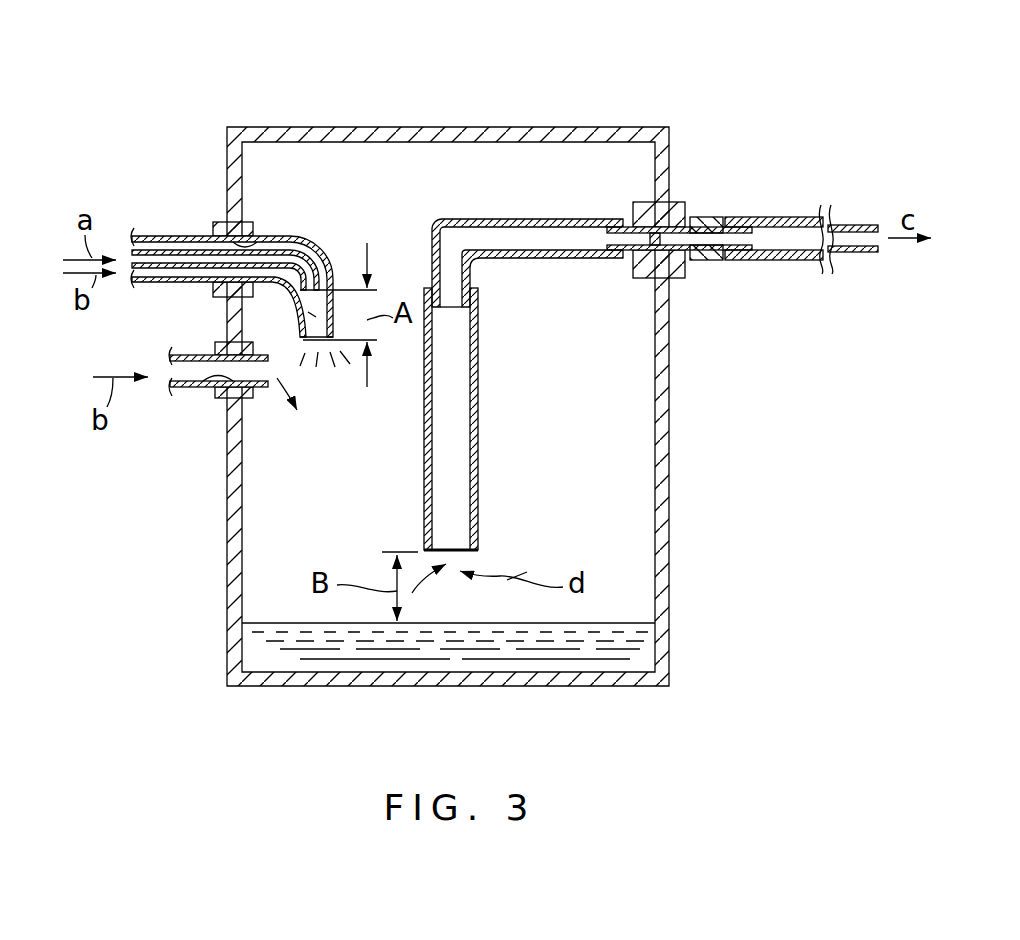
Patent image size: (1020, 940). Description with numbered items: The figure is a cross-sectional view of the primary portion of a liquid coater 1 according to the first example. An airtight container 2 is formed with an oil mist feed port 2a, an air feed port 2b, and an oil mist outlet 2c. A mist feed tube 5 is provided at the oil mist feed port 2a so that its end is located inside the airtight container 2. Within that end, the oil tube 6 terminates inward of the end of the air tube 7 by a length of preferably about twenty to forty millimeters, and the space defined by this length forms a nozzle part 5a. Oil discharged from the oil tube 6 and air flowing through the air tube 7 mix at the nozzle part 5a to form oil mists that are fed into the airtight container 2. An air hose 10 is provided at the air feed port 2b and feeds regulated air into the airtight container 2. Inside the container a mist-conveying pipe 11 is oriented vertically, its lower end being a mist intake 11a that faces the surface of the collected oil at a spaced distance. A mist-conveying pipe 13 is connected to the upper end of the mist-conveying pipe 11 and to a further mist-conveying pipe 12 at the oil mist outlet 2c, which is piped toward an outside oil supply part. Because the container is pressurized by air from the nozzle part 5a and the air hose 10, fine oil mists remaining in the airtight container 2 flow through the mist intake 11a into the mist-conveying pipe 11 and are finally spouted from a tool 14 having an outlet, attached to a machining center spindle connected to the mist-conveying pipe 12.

The apparatus 1 is at (598, 84).
The airtight container 2 is at (425, 130).
The oil mist feed port 2a is at (253, 236).
The air feed port 2b is at (212, 398).
The oil mist outlet 2c is at (693, 217).
The mist feed tube 5 is at (167, 236).
The nozzle part 5a is at (297, 340).
The oil tube 6 is at (148, 283).
The air tube 7 is at (188, 282).
The air hose 10 is at (188, 388).
The mist-conveying pipe 11 is at (478, 390).
The mist intake 11a is at (455, 553).
The mist-conveying pipe 12 is at (765, 262).
The mist-conveying pipe 13 is at (573, 219).
The tool 14 is at (850, 225).